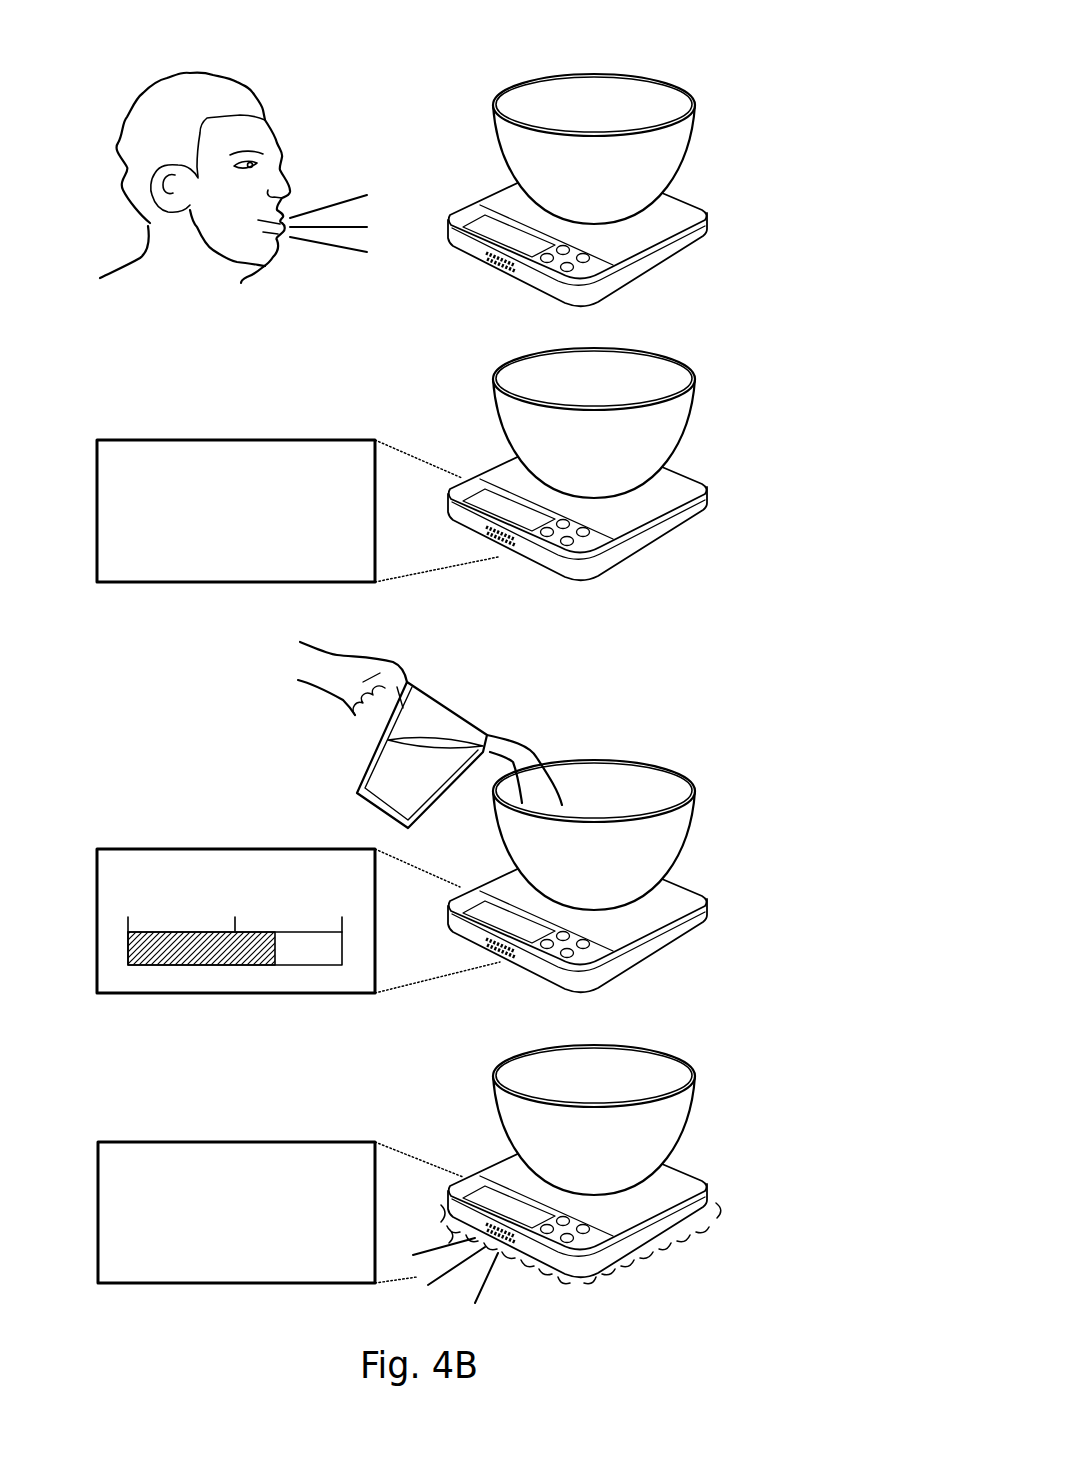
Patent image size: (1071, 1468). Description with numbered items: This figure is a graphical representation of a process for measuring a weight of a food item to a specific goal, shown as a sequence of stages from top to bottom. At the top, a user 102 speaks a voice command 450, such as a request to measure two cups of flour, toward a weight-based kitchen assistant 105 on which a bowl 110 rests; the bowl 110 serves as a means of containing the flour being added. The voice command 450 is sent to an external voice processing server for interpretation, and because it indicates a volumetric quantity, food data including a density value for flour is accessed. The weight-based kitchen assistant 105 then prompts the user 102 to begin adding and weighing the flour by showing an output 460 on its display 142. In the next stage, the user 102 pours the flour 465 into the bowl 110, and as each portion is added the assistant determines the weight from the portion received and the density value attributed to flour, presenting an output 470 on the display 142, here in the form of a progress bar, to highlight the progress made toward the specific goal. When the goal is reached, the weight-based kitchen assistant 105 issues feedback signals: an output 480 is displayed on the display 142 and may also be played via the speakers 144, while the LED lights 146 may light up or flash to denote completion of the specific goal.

The user 102 is at (245, 80).
The bowl 110 is at (620, 75).
The weight-based kitchen assistant 105 is at (635, 280).
The voice command 450 is at (320, 207).
The output 460 is at (168, 440).
The display 142 is at (533, 530).
The flour 465 is at (367, 763).
The output 470 is at (168, 849).
The output 480 is at (167, 1142).
The speakers 144 is at (518, 1240).
The LED lights 146 is at (692, 1237).